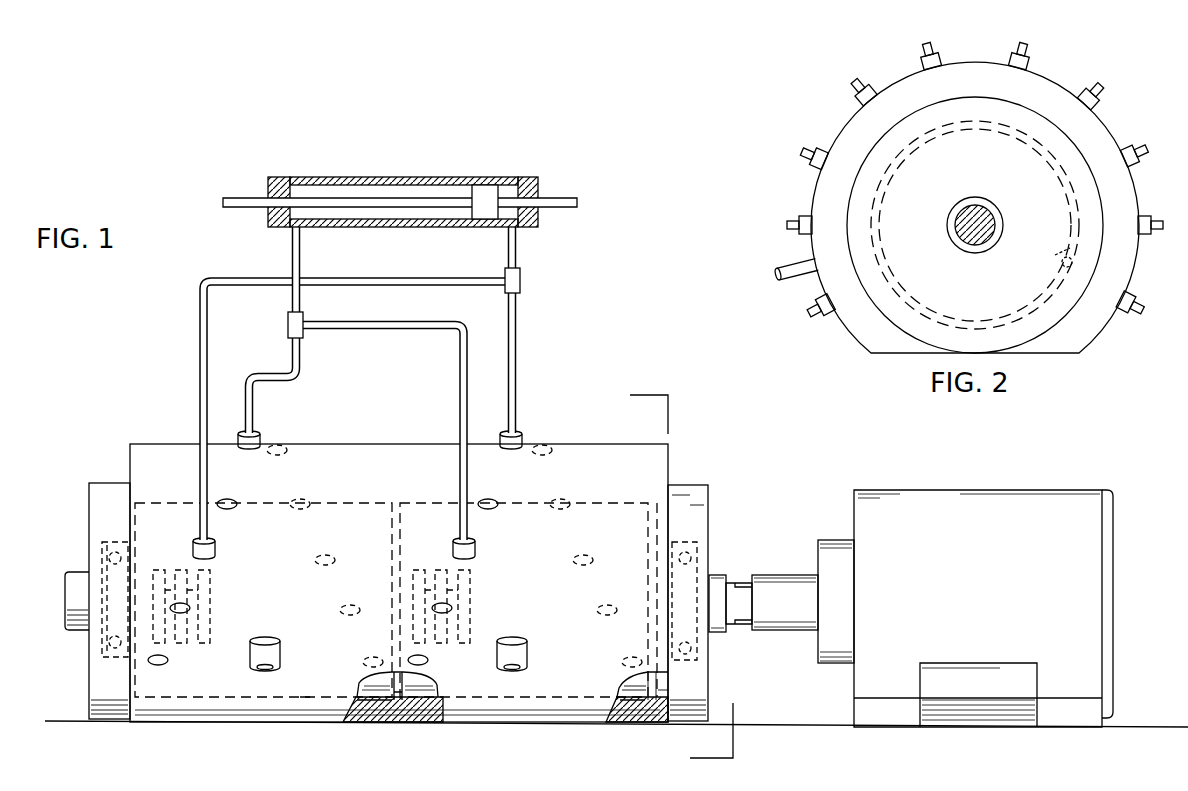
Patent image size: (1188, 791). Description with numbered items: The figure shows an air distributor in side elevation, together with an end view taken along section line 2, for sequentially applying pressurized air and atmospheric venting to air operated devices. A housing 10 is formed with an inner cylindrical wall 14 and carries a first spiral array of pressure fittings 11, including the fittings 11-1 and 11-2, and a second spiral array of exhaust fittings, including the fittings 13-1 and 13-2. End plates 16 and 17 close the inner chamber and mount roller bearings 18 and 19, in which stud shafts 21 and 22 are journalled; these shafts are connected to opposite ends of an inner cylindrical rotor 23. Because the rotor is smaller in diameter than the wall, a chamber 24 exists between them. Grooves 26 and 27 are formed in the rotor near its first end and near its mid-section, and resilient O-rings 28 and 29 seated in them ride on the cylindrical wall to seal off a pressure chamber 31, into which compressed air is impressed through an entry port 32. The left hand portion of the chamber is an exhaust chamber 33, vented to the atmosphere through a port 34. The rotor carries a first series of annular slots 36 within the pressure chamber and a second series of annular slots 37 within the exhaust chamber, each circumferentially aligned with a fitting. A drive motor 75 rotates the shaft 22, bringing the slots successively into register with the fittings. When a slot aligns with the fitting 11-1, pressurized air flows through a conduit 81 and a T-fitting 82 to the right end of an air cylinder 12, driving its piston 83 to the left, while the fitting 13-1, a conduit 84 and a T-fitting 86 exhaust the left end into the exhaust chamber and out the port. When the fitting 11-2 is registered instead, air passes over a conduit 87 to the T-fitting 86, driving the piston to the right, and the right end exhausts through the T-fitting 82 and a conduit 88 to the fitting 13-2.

In FIG. 1, the housing 10 is at (150, 444).
In FIG. 2, the housing 10 is at (840, 127).
In FIG. 2, the pressure fittings 11 is at (920, 60).
In FIG. 1, the pressure fitting 11-1 is at (522, 440).
In FIG. 1, the pressure fitting 11-2 is at (477, 548).
In FIG. 1, the air cylinder 12 is at (318, 177).
In FIG. 1, the exhaust fitting 13-1 is at (260, 438).
In FIG. 1, the exhaust fitting 13-2 is at (217, 548).
In FIG. 1, the inner cylindrical wall 14 is at (145, 504).
In FIG. 2, the inner cylindrical wall 14 is at (1078, 272).
In FIG. 1, the end plate 16 is at (90, 504).
In FIG. 1, the end plate 17 is at (700, 488).
In FIG. 2, the end plate 17 is at (1070, 138).
In FIG. 1, the roller bearing 18 is at (102, 551).
In FIG. 1, the roller bearing 19 is at (695, 652).
In FIG. 1, the stud shaft 21 is at (66, 592).
In FIG. 1, the stud shaft 22 is at (720, 577).
In FIG. 2, the stud shaft 22 is at (952, 215).
In FIG. 1, the inner cylindrical rotor 23 is at (297, 702).
In FIG. 2, the inner cylindrical rotor 23 is at (1085, 247).
In FIG. 1, the chamber 24 is at (416, 700).
In FIG. 2, the chamber 24 is at (1056, 299).
In FIG. 1, the groove 26 is at (404, 685).
In FIG. 1, the groove 27 is at (660, 690).
In FIG. 1, the O-ring 28 is at (397, 703).
In FIG. 1, the O-ring 29 is at (651, 705).
In FIG. 1, the pressure chamber 31 is at (616, 705).
In FIG. 1, the entry port 32 is at (508, 670).
In FIG. 2, the entry port 32 is at (782, 262).
In FIG. 1, the exhaust chamber 33 is at (365, 700).
In FIG. 1, the port 34 is at (265, 668).
In FIG. 1, the annular slots 36 is at (425, 593).
In FIG. 1, the annular slots 37 is at (165, 594).
In FIG. 1, the drive motor 75 is at (1008, 492).
In FIG. 1, the conduit 81 is at (507, 412).
In FIG. 1, the T-fitting 82 is at (520, 285).
In FIG. 1, the piston 83 is at (486, 190).
In FIG. 1, the conduit 84 is at (301, 356).
In FIG. 1, the T-fitting 86 is at (305, 322).
In FIG. 1, the conduit 87 is at (459, 426).
In FIG. 1, the conduit 88 is at (200, 349).
In FIG. 1, the section line 2 is at (669, 579).